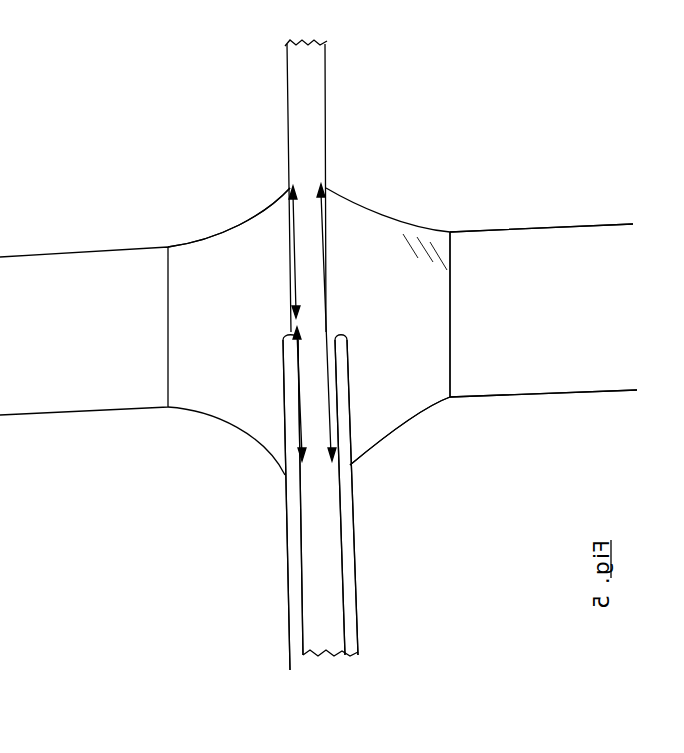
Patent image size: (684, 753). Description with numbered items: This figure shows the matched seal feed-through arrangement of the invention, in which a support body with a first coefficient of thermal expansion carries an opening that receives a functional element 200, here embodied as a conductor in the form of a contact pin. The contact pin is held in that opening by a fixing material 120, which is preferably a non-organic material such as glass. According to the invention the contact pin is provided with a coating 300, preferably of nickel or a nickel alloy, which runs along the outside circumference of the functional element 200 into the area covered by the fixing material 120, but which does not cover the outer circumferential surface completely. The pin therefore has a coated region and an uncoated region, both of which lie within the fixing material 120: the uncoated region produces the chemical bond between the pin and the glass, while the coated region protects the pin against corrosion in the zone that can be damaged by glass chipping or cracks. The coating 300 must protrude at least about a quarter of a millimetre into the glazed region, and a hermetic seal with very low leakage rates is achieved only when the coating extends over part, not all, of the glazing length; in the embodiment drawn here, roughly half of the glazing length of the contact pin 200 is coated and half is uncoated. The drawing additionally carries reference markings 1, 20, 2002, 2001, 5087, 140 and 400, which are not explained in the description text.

The fluid handling device 1 is at (327, 228).
The flow inlet path 20 is at (292, 184).
The upstream conduit 2002 is at (288, 112).
The downstream conduit 2001 is at (313, 584).
The functional element 200 is at (315, 510).
The coating 300 is at (350, 540).
The flow direction arrows 5087 is at (312, 322).
The fixing material 120 is at (391, 410).
The transition wall 140 is at (450, 378).
The outlet tube 400 is at (540, 378).